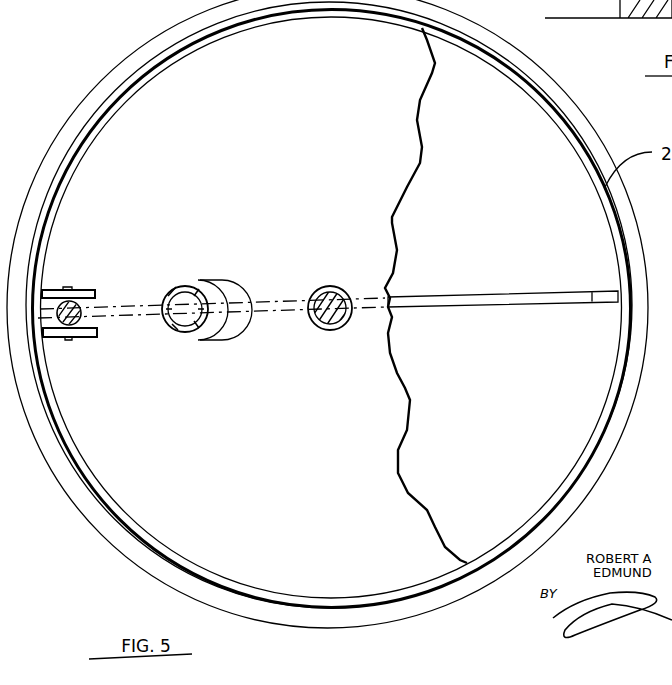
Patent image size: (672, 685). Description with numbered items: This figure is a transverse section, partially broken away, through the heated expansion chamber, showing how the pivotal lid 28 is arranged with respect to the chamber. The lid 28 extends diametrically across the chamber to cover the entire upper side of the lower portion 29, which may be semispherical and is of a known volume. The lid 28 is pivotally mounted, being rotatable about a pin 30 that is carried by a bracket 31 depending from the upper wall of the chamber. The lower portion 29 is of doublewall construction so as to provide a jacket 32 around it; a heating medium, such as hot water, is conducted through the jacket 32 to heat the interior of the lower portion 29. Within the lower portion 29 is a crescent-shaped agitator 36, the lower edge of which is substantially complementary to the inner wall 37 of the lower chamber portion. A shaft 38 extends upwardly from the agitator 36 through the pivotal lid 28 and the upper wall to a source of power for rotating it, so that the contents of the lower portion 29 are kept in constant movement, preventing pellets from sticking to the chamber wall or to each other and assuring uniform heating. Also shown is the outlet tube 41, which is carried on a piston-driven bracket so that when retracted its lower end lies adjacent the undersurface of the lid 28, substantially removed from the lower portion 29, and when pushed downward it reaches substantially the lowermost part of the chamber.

The lid 28 is at (290, 160).
The bottom portion of the chamber 29 is at (470, 195).
The pin 30 is at (68, 339).
The bracket 31 is at (80, 318).
The jacket 32 is at (107, 523).
The agitator 36 is at (482, 300).
The inner wall 37 is at (497, 65).
The shaft 38 is at (317, 292).
The outlet tube 41 is at (178, 290).